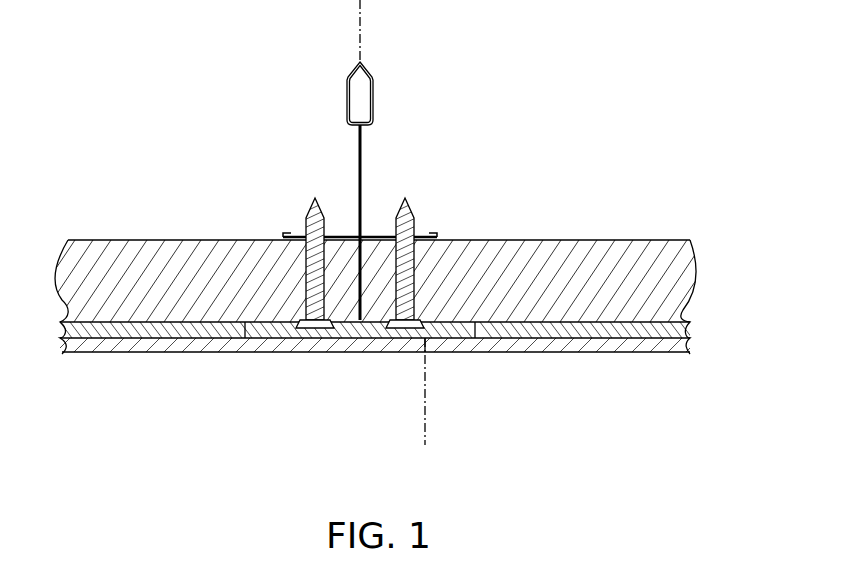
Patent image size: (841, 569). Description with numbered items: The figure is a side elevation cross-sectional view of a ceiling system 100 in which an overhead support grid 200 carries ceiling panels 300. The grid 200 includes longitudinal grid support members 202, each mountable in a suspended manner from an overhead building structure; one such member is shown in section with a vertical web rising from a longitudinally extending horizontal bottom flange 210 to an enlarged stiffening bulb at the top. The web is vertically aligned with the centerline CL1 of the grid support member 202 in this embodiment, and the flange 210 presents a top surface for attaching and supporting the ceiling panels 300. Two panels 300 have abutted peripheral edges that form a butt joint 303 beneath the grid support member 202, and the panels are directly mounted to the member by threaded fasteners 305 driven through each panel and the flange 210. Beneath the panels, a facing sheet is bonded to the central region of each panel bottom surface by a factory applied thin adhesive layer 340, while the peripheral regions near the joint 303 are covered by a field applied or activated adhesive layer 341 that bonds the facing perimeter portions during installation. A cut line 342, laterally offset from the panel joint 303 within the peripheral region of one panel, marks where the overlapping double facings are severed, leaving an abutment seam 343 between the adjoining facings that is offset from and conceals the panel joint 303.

The ceiling system 100 is at (116, 127).
The overhead support grid 200 is at (376, 66).
The grid support member 202 is at (381, 103).
The bottom flange 210 is at (431, 236).
The ceiling panel 300 is at (117, 240).
The joint 303 is at (357, 273).
The threaded fasteners 305 is at (410, 234).
The factory applied adhesive layer 340 is at (167, 330).
The field applied adhesive layer 341 is at (347, 332).
The cut line 342 is at (424, 401).
The abutment seam 343 is at (427, 345).
The centerline of the grid support member CL1 is at (364, 13).